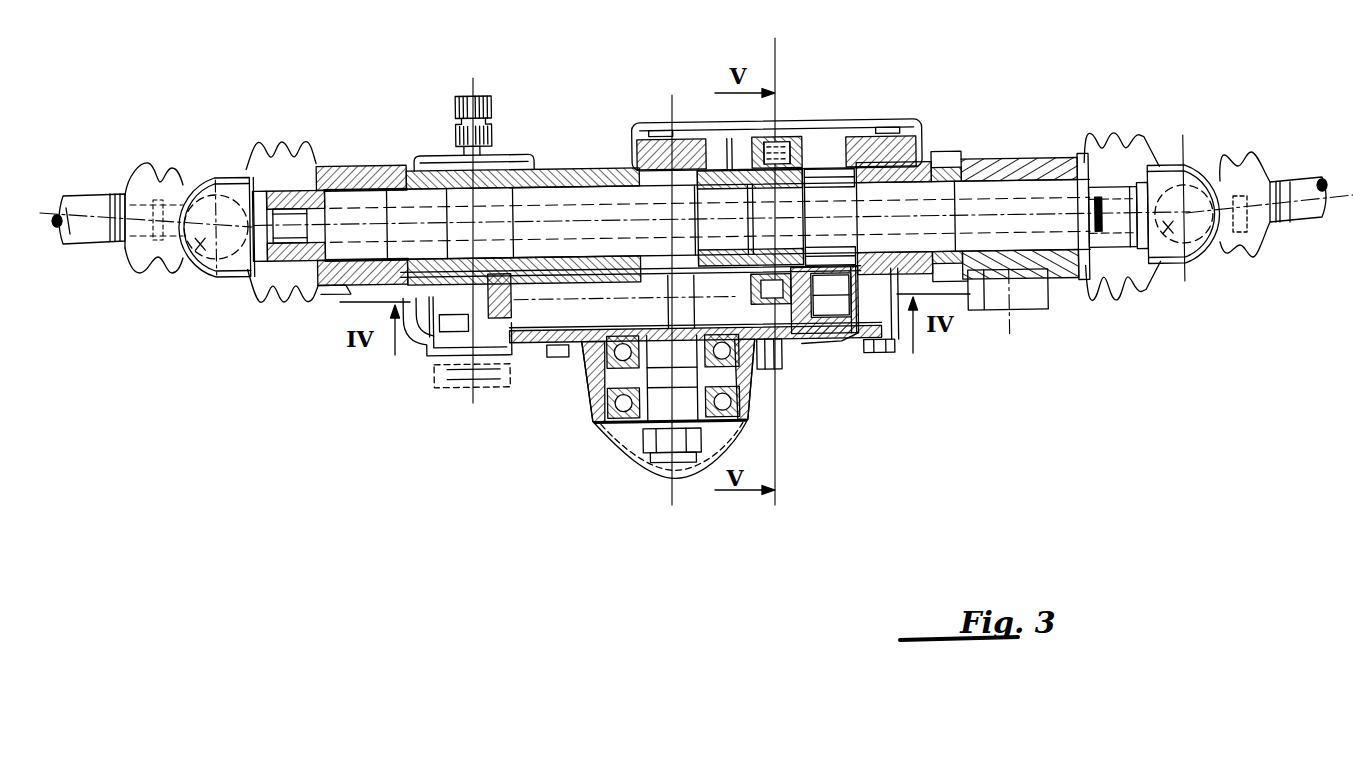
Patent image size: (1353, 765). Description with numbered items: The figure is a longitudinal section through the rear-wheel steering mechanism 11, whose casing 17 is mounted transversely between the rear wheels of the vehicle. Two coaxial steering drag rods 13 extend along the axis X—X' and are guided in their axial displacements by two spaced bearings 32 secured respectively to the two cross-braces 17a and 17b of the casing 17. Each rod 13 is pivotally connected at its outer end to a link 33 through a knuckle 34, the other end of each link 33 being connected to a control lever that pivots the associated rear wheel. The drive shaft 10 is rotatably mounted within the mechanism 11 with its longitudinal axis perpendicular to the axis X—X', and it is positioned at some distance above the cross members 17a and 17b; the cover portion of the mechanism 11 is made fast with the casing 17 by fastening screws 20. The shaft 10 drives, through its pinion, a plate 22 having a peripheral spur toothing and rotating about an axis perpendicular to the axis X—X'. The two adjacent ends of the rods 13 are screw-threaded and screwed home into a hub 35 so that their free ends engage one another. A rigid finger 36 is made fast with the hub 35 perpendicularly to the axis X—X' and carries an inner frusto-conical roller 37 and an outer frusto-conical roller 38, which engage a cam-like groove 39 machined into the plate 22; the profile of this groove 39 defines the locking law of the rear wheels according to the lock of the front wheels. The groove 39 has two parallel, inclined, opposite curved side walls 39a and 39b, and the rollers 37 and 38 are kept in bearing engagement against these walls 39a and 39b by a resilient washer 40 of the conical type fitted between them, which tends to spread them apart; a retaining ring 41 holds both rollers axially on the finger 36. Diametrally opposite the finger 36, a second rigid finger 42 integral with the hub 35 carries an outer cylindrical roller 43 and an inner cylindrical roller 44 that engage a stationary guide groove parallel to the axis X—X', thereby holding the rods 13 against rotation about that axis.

The drive shaft 10 is at (480, 152).
The mechanism 11 is at (426, 397).
The steering drag rods 13 is at (577, 212).
The casing 17 is at (883, 273).
The cross-brace 17a is at (557, 172).
The cross-brace 17b is at (975, 205).
The fastening screws 20 is at (557, 356).
The plate 22 is at (540, 312).
The bearings 32 is at (372, 183).
The link 33 is at (93, 210).
The knuckle 34 is at (227, 213).
The hub 35 is at (737, 187).
The rigid finger 36 is at (812, 337).
The inner frusto-conical roller 37 is at (818, 278).
The outer frusto-conical roller 38 is at (748, 325).
The cam-like groove 39 is at (670, 335).
The curved side wall 39a is at (733, 272).
The curved side wall 39b is at (728, 308).
The resilient washer 40 is at (850, 322).
The retaining ring 41 is at (783, 337).
The second rigid finger 42 is at (780, 147).
The outer cylindrical roller 43 is at (807, 157).
The inner cylindrical roller 44 is at (815, 160).